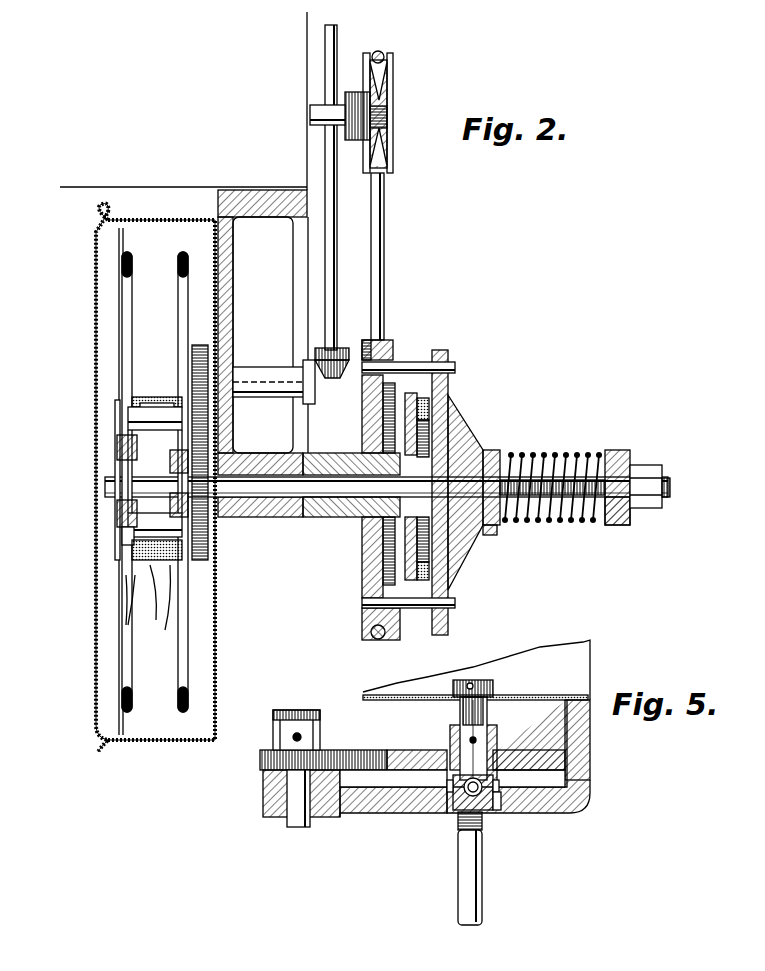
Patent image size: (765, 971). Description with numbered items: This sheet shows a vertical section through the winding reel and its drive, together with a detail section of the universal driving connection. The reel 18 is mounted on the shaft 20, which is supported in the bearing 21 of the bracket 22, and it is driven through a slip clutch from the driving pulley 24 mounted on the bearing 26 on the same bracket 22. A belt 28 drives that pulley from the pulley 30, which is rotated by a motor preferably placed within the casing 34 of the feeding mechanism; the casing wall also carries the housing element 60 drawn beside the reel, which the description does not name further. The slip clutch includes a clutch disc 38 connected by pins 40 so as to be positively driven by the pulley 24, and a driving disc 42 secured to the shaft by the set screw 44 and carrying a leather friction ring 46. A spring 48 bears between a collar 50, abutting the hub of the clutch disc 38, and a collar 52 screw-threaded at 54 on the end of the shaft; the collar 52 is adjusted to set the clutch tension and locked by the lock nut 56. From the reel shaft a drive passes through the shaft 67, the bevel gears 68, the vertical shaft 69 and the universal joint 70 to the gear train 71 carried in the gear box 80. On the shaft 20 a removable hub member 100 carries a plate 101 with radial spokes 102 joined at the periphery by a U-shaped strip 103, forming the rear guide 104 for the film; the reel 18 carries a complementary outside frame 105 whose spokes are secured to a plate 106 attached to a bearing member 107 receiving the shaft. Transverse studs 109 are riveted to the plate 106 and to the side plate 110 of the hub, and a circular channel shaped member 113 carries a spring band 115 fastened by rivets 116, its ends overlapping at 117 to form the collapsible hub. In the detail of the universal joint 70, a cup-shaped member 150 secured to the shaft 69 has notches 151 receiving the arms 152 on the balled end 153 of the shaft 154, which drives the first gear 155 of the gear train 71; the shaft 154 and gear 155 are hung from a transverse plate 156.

In FIG. 2, the reel 18 is at (114, 415).
In FIG. 2, the shaft 20 is at (128, 486).
In FIG. 2, the bearing 21 is at (670, 492).
In FIG. 2, the bracket 22 is at (292, 520).
In FIG. 2, the driving pulley 24 is at (392, 350).
In FIG. 2, the bearing 26 is at (330, 517).
In FIG. 2, the belt 28 is at (384, 220).
In FIG. 2, the pulley 30 is at (382, 100).
In FIG. 2, the casing 34 is at (108, 168).
In FIG. 2, the clutch disc 38 is at (449, 400).
In FIG. 2, the pins 40 is at (426, 367).
In FIG. 2, the driving disc 42 is at (430, 438).
In FIG. 2, the set screw 44 is at (470, 465).
In FIG. 2, the leather friction ring 46 is at (440, 575).
In FIG. 2, the spring 48 is at (580, 460).
In FIG. 2, the collar 50 is at (496, 533).
In FIG. 2, the collar 52 is at (625, 458).
In FIG. 2, the screw thread 54 is at (625, 510).
In FIG. 2, the lock nut 56 is at (650, 470).
In FIG. 2, the bellows casing 60 is at (178, 220).
In FIG. 2, the shaft 67 is at (292, 398).
In FIG. 2, the bevel gears 68 is at (332, 372).
In FIG. 2, the vertical shaft 69 is at (340, 270).
In FIG. 5, the vertical shaft 69 is at (482, 900).
In FIG. 5, the universal joint 70 is at (498, 808).
In FIG. 5, the gear train 71 is at (354, 750).
In FIG. 5, the gear box 80 is at (272, 815).
In FIG. 2, the removable hub member 100 is at (118, 525).
In FIG. 2, the plate 101 is at (128, 540).
In FIG. 2, the radial spokes 102 is at (128, 603).
In FIG. 2, the U-shaped strip 103 is at (128, 712).
In FIG. 2, the rear guide 104 is at (186, 520).
In FIG. 2, the outside frame 105 is at (184, 628).
In FIG. 2, the plate 106 is at (182, 565).
In FIG. 2, the bearing member 107 is at (120, 500).
In FIG. 2, the transverse studs 109 is at (156, 530).
In FIG. 2, the side plate 110 is at (133, 437).
In FIG. 2, the circular channel shaped member 113 is at (156, 620).
In FIG. 2, the spring band 115 is at (165, 632).
In FIG. 2, the rivets 116 is at (128, 625).
In FIG. 2, the overlapping ends 117 is at (172, 397).
In FIG. 5, the cup-shaped member 150 is at (453, 800).
In FIG. 5, the notches 151 is at (500, 780).
In FIG. 5, the arms 152 is at (570, 812).
In FIG. 5, the balled end 153 is at (460, 825).
In FIG. 5, the shaft 154 is at (487, 742).
In FIG. 5, the first gear 155 is at (420, 750).
In FIG. 5, the transverse plate 156 is at (512, 695).